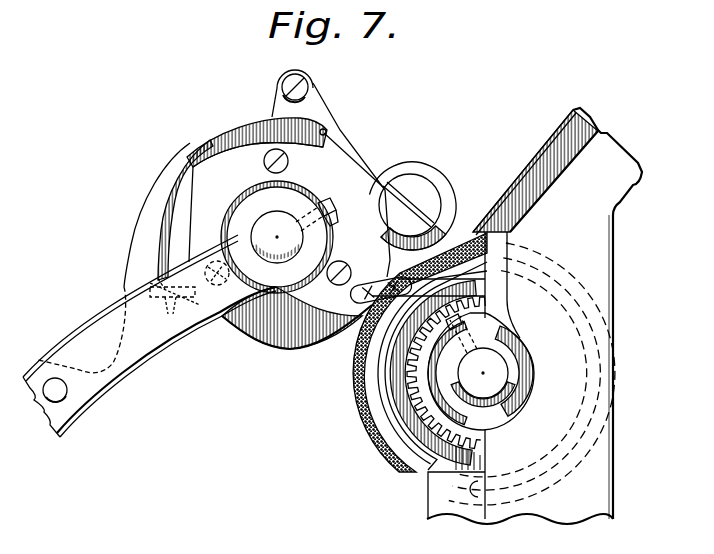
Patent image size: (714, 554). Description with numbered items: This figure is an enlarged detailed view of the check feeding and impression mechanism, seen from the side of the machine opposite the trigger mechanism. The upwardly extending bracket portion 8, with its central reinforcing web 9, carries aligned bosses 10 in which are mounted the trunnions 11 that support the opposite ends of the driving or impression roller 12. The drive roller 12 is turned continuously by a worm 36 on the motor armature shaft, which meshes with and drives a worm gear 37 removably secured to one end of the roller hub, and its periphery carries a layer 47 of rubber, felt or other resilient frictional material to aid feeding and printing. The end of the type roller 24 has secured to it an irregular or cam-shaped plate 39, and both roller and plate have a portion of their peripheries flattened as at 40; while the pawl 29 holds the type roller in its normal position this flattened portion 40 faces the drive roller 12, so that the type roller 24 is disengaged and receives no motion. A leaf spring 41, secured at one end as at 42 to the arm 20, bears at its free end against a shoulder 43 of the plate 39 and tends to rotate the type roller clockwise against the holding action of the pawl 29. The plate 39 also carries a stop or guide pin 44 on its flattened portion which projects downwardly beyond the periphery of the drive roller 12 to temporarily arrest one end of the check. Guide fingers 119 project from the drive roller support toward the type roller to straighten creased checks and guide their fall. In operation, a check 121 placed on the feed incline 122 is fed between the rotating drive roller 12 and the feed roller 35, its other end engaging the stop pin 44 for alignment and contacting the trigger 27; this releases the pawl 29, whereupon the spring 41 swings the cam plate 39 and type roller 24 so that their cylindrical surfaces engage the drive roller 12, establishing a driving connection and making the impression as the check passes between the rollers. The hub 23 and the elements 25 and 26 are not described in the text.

The bracket portion 8 is at (600, 255).
The reinforcing web 9 is at (603, 152).
The bosses 10 is at (517, 385).
The trunnions 11 is at (490, 387).
The drive roller 12 is at (400, 448).
The arm 20 is at (137, 343).
The hub of shoe 23 is at (277, 250).
The type roller 24 is at (265, 222).
The lug 25 is at (274, 100).
The screw 26 is at (313, 79).
The trigger 27 is at (328, 111).
The pawl 29 is at (160, 186).
The feed roller 35 is at (405, 168).
The worm 36 is at (463, 472).
The worm gear 37 is at (420, 410).
The cam-shaped plate 39 is at (287, 317).
The flattened portion 40 is at (365, 312).
The leaf spring 41 is at (210, 145).
The securing point of leaf spring 42 is at (143, 292).
The shoulder 43 is at (312, 138).
The stop or guide pin 44 is at (357, 298).
The resilient frictional layer 47 is at (392, 396).
The guide fingers 119 is at (398, 280).
The check 121 is at (557, 128).
The feed incline 122 is at (573, 110).